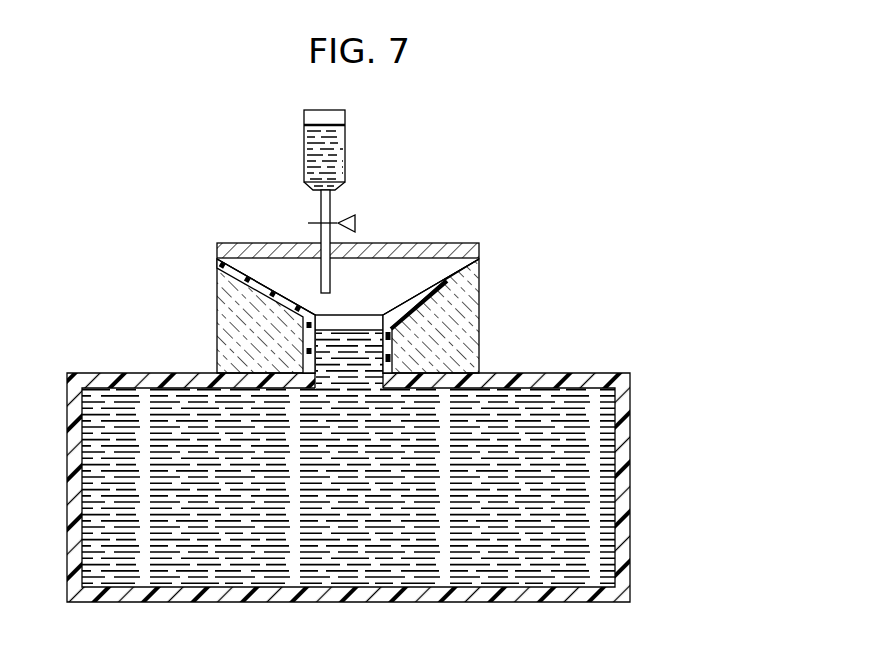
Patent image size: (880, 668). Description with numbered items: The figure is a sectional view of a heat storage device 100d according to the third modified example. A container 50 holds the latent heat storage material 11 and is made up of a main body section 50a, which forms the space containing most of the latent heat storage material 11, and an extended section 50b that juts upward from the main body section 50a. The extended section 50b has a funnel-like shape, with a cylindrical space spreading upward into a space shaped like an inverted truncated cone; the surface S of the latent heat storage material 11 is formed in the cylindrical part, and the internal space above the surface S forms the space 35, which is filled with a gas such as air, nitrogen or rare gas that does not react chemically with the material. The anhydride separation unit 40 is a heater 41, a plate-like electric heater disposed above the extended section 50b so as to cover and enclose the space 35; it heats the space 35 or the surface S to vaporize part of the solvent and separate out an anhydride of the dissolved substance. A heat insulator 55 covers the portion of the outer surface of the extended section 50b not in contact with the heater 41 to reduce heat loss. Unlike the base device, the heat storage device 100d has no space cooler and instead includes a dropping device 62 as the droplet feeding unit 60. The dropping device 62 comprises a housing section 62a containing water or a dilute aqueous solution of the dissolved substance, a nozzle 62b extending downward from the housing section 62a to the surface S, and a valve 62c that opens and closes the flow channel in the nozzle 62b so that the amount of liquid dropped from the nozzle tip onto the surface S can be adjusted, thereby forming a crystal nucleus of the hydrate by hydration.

The heat storage device 100d is at (502, 98).
The latent heat storage material 11 is at (577, 493).
The space 35 is at (428, 272).
The anhydride separation unit 40 is at (348, 211).
The heater 41 is at (387, 243).
The container 50 is at (731, 341).
The main body section 50a is at (624, 388).
The extended section 50b is at (390, 360).
The heat insulator 55 is at (228, 346).
The droplet feeding unit 60 is at (287, 191).
The dropping device 62 is at (293, 116).
The housing section 62a is at (304, 163).
The nozzle 62b is at (322, 233).
The valve 62c is at (349, 212).
The surface S is at (375, 327).